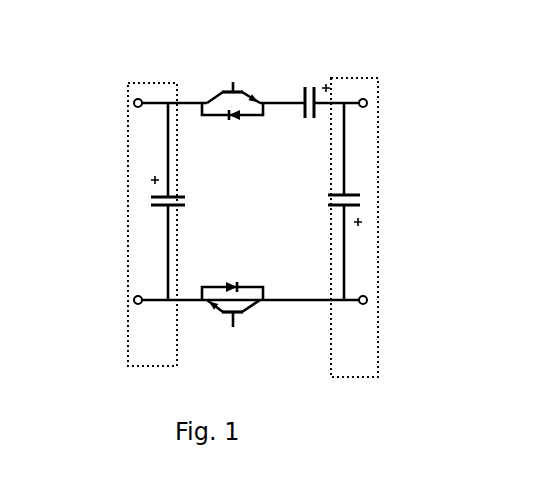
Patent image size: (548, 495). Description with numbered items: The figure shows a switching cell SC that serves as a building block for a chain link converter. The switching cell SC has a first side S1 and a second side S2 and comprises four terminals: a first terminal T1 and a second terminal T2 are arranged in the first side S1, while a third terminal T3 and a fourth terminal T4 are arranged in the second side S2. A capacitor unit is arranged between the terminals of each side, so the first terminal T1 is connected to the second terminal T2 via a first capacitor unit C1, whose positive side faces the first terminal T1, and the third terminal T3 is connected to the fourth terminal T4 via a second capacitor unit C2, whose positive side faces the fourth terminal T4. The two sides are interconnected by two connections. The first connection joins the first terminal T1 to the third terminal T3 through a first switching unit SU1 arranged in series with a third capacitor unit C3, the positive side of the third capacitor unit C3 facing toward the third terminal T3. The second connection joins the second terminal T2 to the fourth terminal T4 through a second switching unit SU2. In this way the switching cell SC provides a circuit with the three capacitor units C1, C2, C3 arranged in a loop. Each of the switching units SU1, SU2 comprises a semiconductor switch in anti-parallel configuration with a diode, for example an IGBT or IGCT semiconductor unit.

The switching cell SC is at (219, 38).
The first side S1 is at (152, 224).
The second side S2 is at (354, 227).
The first terminal T1 is at (134, 100).
The second terminal T2 is at (133, 303).
The third terminal T3 is at (368, 100).
The fourth terminal T4 is at (368, 302).
The first capacitor unit C1 is at (182, 203).
The second capacitor unit C2 is at (325, 207).
The third capacitor unit C3 is at (311, 82).
The first switching unit SU1 is at (252, 92).
The second switching unit SU2 is at (245, 318).